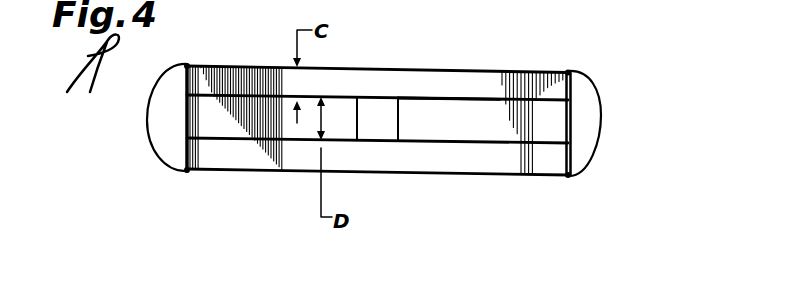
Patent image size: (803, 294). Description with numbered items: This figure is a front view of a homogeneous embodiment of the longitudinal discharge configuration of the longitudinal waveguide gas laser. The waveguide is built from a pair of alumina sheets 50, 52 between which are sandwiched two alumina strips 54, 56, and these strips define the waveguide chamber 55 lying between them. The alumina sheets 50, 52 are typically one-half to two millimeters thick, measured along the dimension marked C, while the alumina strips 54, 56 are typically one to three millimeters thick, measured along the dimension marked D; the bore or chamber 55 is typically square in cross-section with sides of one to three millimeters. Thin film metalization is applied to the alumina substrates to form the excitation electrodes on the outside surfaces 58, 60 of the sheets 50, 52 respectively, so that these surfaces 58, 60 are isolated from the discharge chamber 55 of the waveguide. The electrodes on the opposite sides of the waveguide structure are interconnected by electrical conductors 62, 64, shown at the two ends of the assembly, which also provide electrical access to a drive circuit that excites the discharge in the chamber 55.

The alumina sheet 50 is at (467, 80).
The alumina sheet 52 is at (480, 155).
The alumina strip 54 is at (250, 118).
The waveguide chamber 55 is at (375, 125).
The alumina strip 56 is at (423, 126).
The outside surface 58 is at (528, 71).
The outside surface 60 is at (523, 158).
The electrical conductor 62 is at (601, 112).
The electrical conductor 64 is at (155, 143).